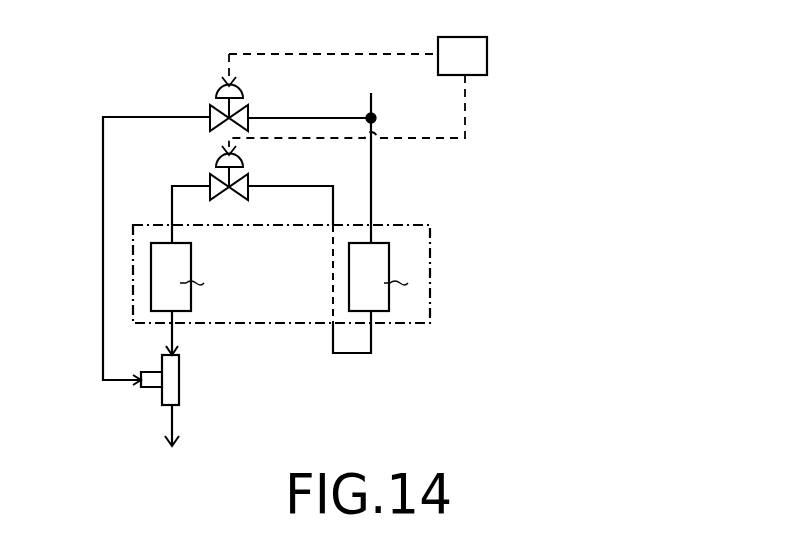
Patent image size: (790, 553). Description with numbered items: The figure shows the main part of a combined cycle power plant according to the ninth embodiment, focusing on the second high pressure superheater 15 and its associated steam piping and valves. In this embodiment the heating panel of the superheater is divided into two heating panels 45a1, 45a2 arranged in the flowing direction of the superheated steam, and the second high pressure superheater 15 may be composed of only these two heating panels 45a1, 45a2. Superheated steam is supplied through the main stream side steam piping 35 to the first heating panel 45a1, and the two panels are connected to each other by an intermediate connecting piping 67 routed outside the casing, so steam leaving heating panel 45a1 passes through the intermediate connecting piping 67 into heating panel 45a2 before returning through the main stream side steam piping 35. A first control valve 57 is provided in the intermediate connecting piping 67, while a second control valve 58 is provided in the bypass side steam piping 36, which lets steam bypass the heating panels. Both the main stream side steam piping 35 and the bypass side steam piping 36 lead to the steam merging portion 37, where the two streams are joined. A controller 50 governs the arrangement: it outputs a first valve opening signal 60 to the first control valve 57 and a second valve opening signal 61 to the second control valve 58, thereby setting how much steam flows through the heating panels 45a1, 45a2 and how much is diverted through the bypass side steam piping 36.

The bypass side steam piping 36 is at (103, 258).
The main stream side steam piping 35 is at (372, 172).
The second control valve 58 is at (241, 105).
The first control valve 57 is at (251, 175).
The intermediate connecting piping 67 is at (326, 206).
The second valve opening signal 61 is at (318, 54).
The first valve opening signal 60 is at (465, 120).
The controller 50 is at (487, 42).
The second high pressure superheater 15 is at (385, 326).
The heating panel 45a2 is at (191, 250).
The heating panel 45a1 is at (389, 252).
The steam merging portion 37 is at (180, 380).